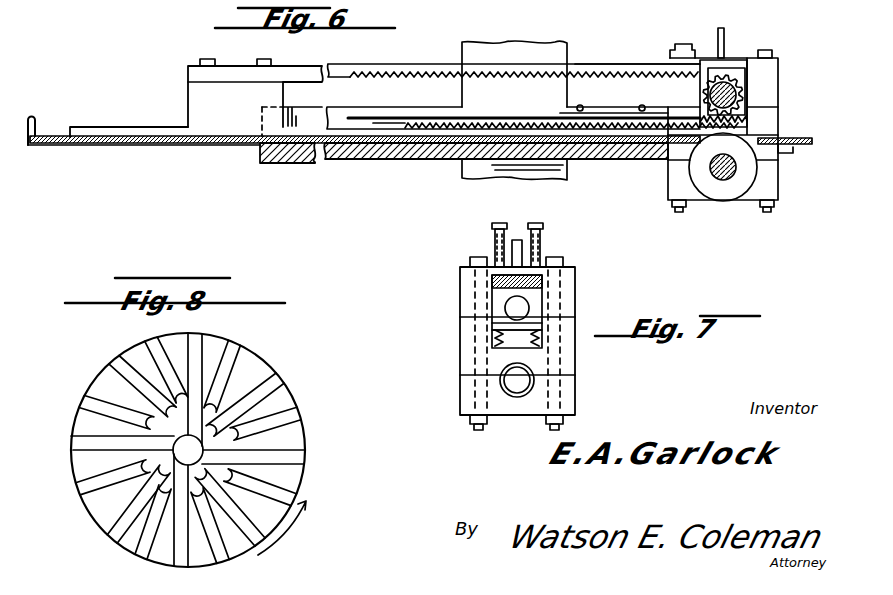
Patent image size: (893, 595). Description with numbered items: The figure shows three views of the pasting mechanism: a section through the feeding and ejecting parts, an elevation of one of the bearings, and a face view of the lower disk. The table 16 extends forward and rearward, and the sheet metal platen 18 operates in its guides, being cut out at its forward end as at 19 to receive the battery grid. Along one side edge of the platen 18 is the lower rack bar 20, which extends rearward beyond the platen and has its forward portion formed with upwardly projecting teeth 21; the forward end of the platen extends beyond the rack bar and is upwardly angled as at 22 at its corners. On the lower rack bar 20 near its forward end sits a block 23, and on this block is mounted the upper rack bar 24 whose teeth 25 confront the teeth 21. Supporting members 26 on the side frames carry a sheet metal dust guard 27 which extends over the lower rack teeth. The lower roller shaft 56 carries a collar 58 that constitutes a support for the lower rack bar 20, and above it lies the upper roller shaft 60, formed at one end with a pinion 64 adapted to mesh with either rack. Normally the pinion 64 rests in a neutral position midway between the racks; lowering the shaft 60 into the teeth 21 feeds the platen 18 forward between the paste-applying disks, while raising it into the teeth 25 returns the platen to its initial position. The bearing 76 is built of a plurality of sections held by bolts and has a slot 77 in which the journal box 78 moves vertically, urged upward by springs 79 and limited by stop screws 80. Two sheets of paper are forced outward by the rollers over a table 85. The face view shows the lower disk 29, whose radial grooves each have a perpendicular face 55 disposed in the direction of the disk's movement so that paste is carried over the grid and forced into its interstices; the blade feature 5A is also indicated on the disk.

In FIG. 6, the table 16 is at (391, 152).
In FIG. 6, the platen 18 is at (215, 143).
In FIG. 6, the cut out 19 is at (541, 43).
In FIG. 6, the lower rack bar 20 is at (347, 130).
In FIG. 6, the teeth 21 is at (432, 120).
In FIG. 6, the upwardly angled corners 22 is at (33, 119).
In FIG. 6, the block 23 is at (205, 97).
In FIG. 6, the upper rack bar 24 is at (603, 64).
In FIG. 6, the teeth 25 is at (446, 52).
In FIG. 6, the supporting members 26 is at (614, 109).
In FIG. 6, the dust guard 27 is at (532, 89).
In FIG. 6, the lower roller shaft 56 is at (737, 167).
In FIG. 6, the collar 58 is at (728, 201).
In FIG. 6, the upper roller shaft 60 is at (747, 97).
In FIG. 6, the pinion 64 is at (729, 83).
In FIG. 6, the bearing 76 is at (778, 186).
In FIG. 7, the bearing 76 is at (572, 290).
In FIG. 7, the slot 77 is at (520, 343).
In FIG. 7, the journal box 78 is at (500, 300).
In FIG. 7, the springs 79 is at (495, 341).
In FIG. 7, the stop screws 80 is at (492, 235).
In FIG. 6, the table 85 is at (807, 138).
In FIG. 8, the lower disk 29 is at (292, 446).
In FIG. 8, the blade 5A is at (262, 380).
In FIG. 8, the perpendicular face 55 is at (150, 537).